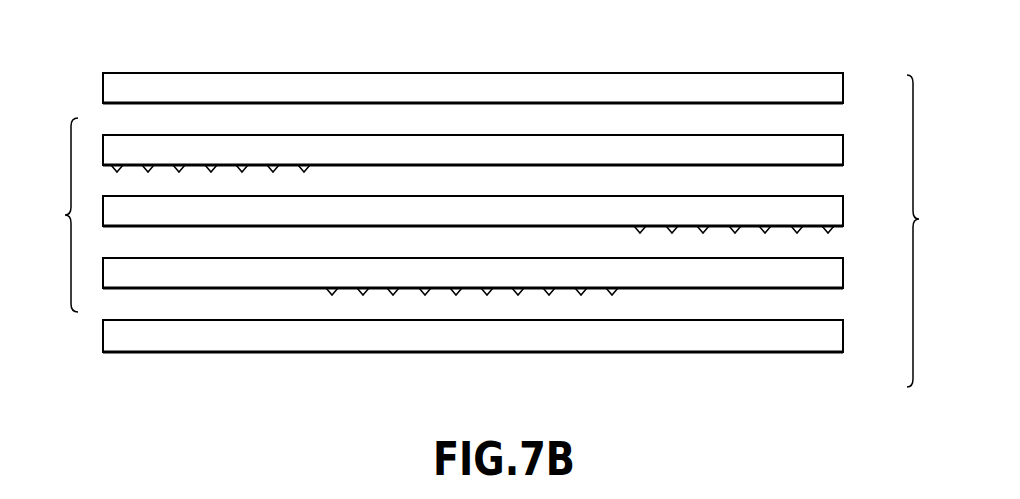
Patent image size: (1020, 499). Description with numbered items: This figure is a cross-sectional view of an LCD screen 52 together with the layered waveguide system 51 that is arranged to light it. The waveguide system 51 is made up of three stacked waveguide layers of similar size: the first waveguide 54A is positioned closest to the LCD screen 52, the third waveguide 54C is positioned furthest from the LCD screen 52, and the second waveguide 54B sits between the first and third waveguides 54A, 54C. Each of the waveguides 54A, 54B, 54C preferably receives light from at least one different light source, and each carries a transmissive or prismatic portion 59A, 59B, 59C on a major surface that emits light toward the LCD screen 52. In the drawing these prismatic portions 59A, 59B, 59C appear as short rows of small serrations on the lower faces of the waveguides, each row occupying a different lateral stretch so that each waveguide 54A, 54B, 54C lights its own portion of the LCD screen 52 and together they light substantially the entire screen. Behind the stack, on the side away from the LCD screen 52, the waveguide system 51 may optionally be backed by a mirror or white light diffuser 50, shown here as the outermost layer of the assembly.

The mirror or white light diffuser 50 is at (708, 83).
The waveguide system 51 is at (56, 215).
The LCD screen 52 is at (250, 345).
The first waveguide 54A is at (837, 278).
The second waveguide 54B is at (837, 210).
The third waveguide 54C is at (828, 155).
The transmissive or prismatic portion of first waveguide 59A is at (456, 295).
The transmissive or prismatic portion of second waveguide 59B is at (733, 237).
The transmissive or prismatic portion of third waveguide 59C is at (242, 165).